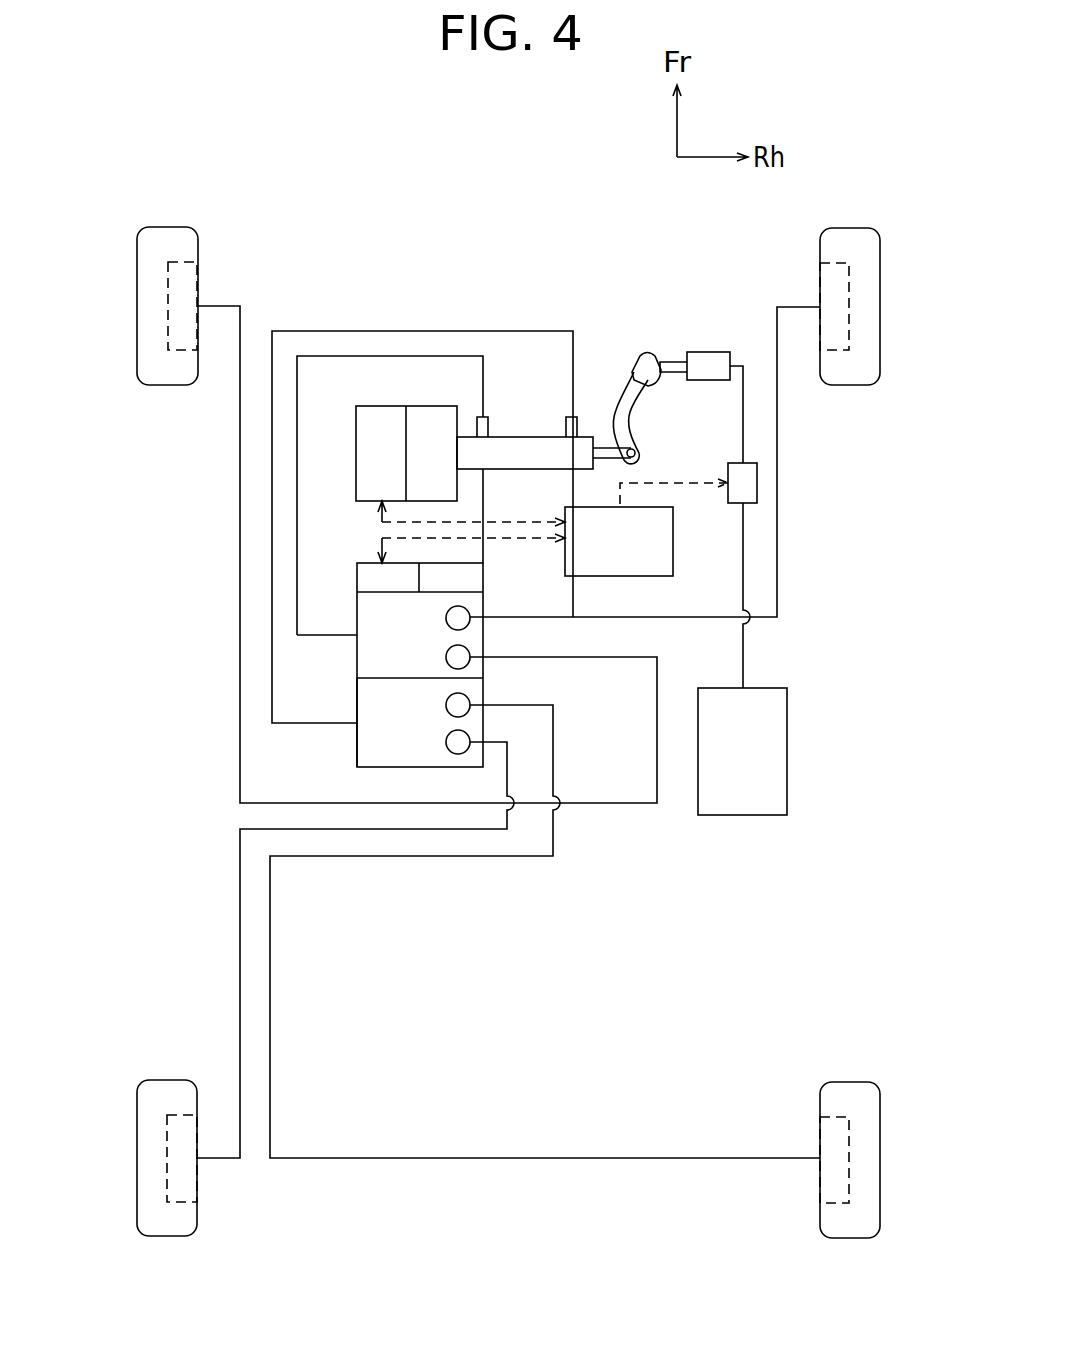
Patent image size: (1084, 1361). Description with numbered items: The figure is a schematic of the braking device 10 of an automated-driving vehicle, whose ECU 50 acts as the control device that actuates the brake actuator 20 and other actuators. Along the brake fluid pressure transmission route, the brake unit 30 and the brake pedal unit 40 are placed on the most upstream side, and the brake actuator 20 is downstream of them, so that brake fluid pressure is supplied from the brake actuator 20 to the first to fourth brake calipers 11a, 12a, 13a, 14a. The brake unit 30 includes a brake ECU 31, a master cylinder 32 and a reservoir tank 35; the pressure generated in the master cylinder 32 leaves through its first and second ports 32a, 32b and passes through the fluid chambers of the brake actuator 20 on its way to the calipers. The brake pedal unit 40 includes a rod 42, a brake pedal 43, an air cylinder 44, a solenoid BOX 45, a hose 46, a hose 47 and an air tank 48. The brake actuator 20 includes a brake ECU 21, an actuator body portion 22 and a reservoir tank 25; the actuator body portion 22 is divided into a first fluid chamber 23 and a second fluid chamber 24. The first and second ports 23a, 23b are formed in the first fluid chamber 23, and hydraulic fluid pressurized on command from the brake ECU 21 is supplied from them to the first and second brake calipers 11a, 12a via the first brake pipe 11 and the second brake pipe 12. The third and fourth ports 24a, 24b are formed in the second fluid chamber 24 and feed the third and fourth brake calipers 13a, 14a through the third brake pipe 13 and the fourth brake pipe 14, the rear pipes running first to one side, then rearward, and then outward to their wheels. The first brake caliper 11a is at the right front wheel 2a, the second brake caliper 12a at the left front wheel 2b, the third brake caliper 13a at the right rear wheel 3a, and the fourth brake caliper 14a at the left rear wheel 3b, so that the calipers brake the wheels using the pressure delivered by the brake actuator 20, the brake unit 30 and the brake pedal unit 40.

The right front wheel 2a is at (868, 253).
The left front wheel 2b is at (145, 265).
The right rear wheel 3a is at (873, 1180).
The left rear wheel 3b is at (137, 1192).
The braking device 10 is at (454, 318).
The first brake pipe 11 is at (778, 514).
The first brake caliper 11a is at (840, 352).
The second brake pipe 12 is at (240, 545).
The second brake caliper 12a is at (178, 352).
The third brake pipe 13 is at (515, 1160).
The third brake caliper 13a is at (840, 1205).
The fourth brake pipe 14 is at (240, 945).
The fourth brake caliper 14a is at (177, 1204).
The brake actuator 20 is at (383, 655).
The brake ECU 21 is at (362, 564).
The actuator body portion 22 is at (355, 702).
The first fluid chamber 23 is at (434, 649).
The first port 23a is at (467, 628).
The second port 23b is at (467, 667).
The second fluid chamber 24 is at (416, 747).
The third port 24a is at (467, 712).
The fourth port 24b is at (452, 755).
The reservoir tank 25 is at (465, 578).
The brake unit 30 is at (544, 395).
The brake ECU 31 is at (370, 405).
The master cylinder 32 is at (533, 469).
The first port 32a is at (566, 428).
The second port 32b is at (490, 417).
The reservoir tank 35 is at (425, 405).
The brake pedal unit 40 is at (691, 398).
The rod 42 is at (612, 462).
The brake pedal 43 is at (630, 397).
The air cylinder 44 is at (707, 350).
The solenoid BOX 45 is at (728, 498).
The hose 46 is at (745, 407).
The hose 47 is at (745, 663).
The air tank 48 is at (788, 749).
The ECU 50 is at (673, 548).